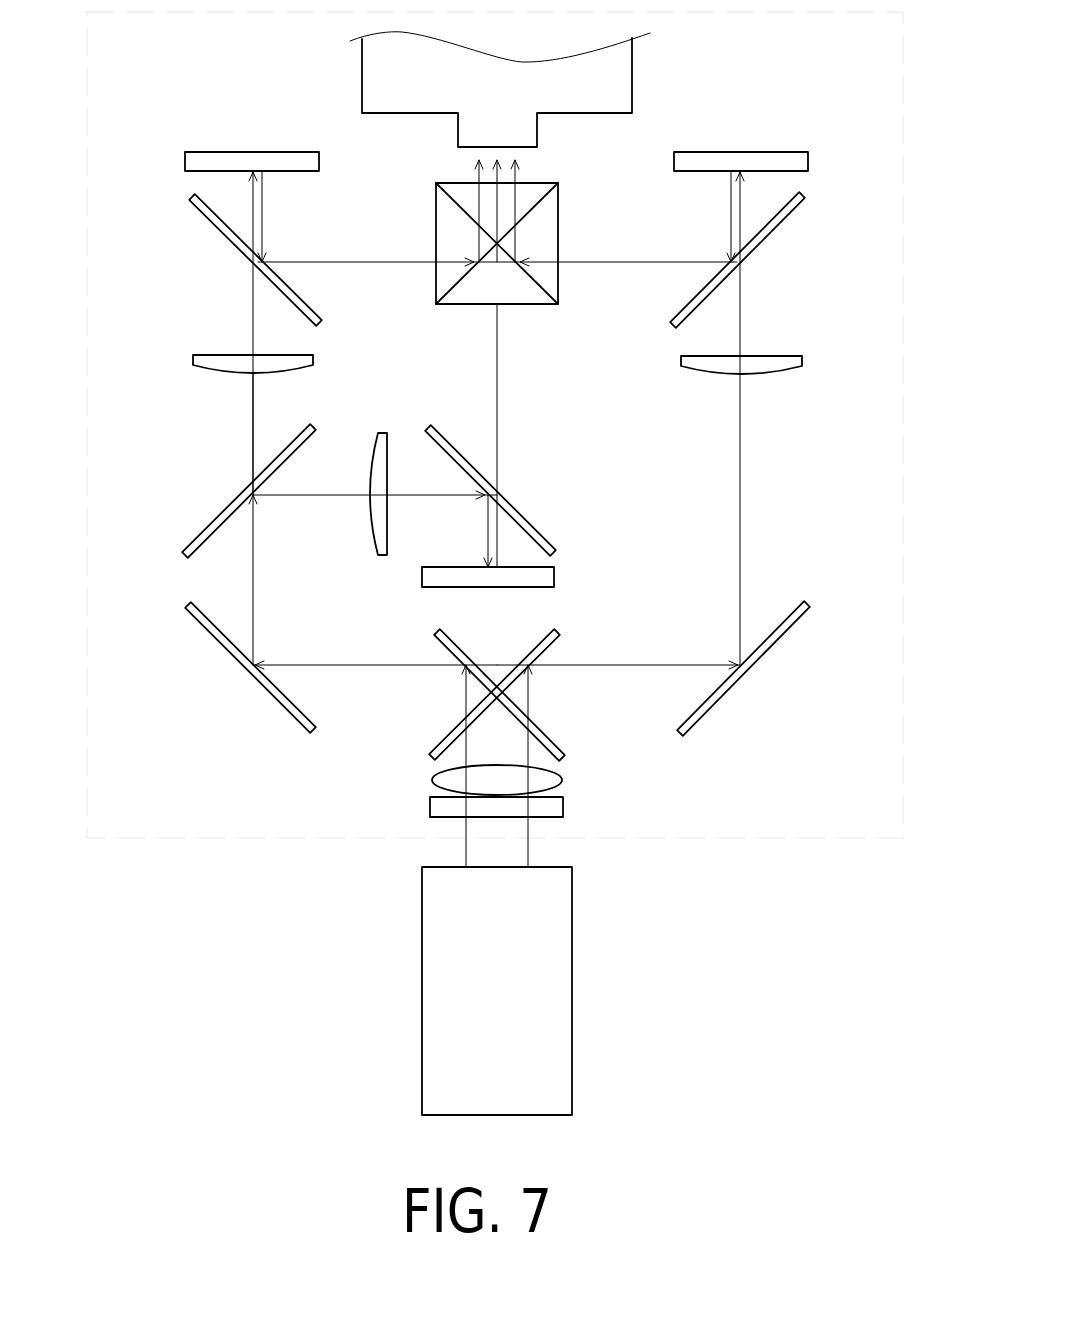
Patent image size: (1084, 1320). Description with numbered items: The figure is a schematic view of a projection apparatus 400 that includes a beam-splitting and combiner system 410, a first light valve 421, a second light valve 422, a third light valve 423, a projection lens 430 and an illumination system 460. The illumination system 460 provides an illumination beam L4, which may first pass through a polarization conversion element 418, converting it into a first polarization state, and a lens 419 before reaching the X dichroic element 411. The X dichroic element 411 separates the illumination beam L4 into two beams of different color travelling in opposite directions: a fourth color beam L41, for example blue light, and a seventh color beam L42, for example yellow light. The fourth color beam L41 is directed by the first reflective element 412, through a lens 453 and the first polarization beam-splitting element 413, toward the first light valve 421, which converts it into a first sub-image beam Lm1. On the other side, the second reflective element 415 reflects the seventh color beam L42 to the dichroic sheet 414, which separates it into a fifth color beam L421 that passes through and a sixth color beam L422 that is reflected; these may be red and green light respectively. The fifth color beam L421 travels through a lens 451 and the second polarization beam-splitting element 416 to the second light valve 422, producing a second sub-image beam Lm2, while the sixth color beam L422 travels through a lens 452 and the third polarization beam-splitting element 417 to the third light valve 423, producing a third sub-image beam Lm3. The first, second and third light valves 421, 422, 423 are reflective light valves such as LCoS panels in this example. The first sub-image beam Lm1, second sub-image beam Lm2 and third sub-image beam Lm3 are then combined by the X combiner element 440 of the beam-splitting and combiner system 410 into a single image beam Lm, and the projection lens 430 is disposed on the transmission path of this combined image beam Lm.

The projection apparatus 400 is at (876, 1008).
The beam-splitting and combiner system 410 is at (181, 840).
The X dichroic element 411 is at (441, 742).
The first reflective element 412 is at (787, 616).
The first polarization beam-splitting element 413 is at (786, 223).
The dichroic sheet 414 is at (200, 535).
The second reflective element 415 is at (199, 617).
The second polarization beam-splitting element 416 is at (212, 223).
The third polarization beam-splitting element 417 is at (521, 515).
The polarization conversion element 418 is at (447, 806).
The lens 419 is at (447, 786).
The first light valve 421 is at (731, 151).
The second light valve 422 is at (232, 151).
The third light valve 423 is at (546, 576).
The projection lens 430 is at (604, 72).
The X combiner element 440 is at (457, 192).
The lens 451 is at (196, 359).
The lens 452 is at (378, 440).
The lens 453 is at (790, 359).
The illumination system 460 is at (439, 978).
The illumination beam L4 is at (465, 858).
The fourth color beam L41 is at (630, 663).
The seventh color beam L42 is at (342, 663).
The fifth color beam L421 is at (252, 423).
The sixth color beam L422 is at (316, 497).
The image beam Lm is at (538, 171).
The first sub-image beam Lm1 is at (730, 212).
The second sub-image beam Lm2 is at (263, 212).
The third sub-image beam Lm3 is at (499, 370).